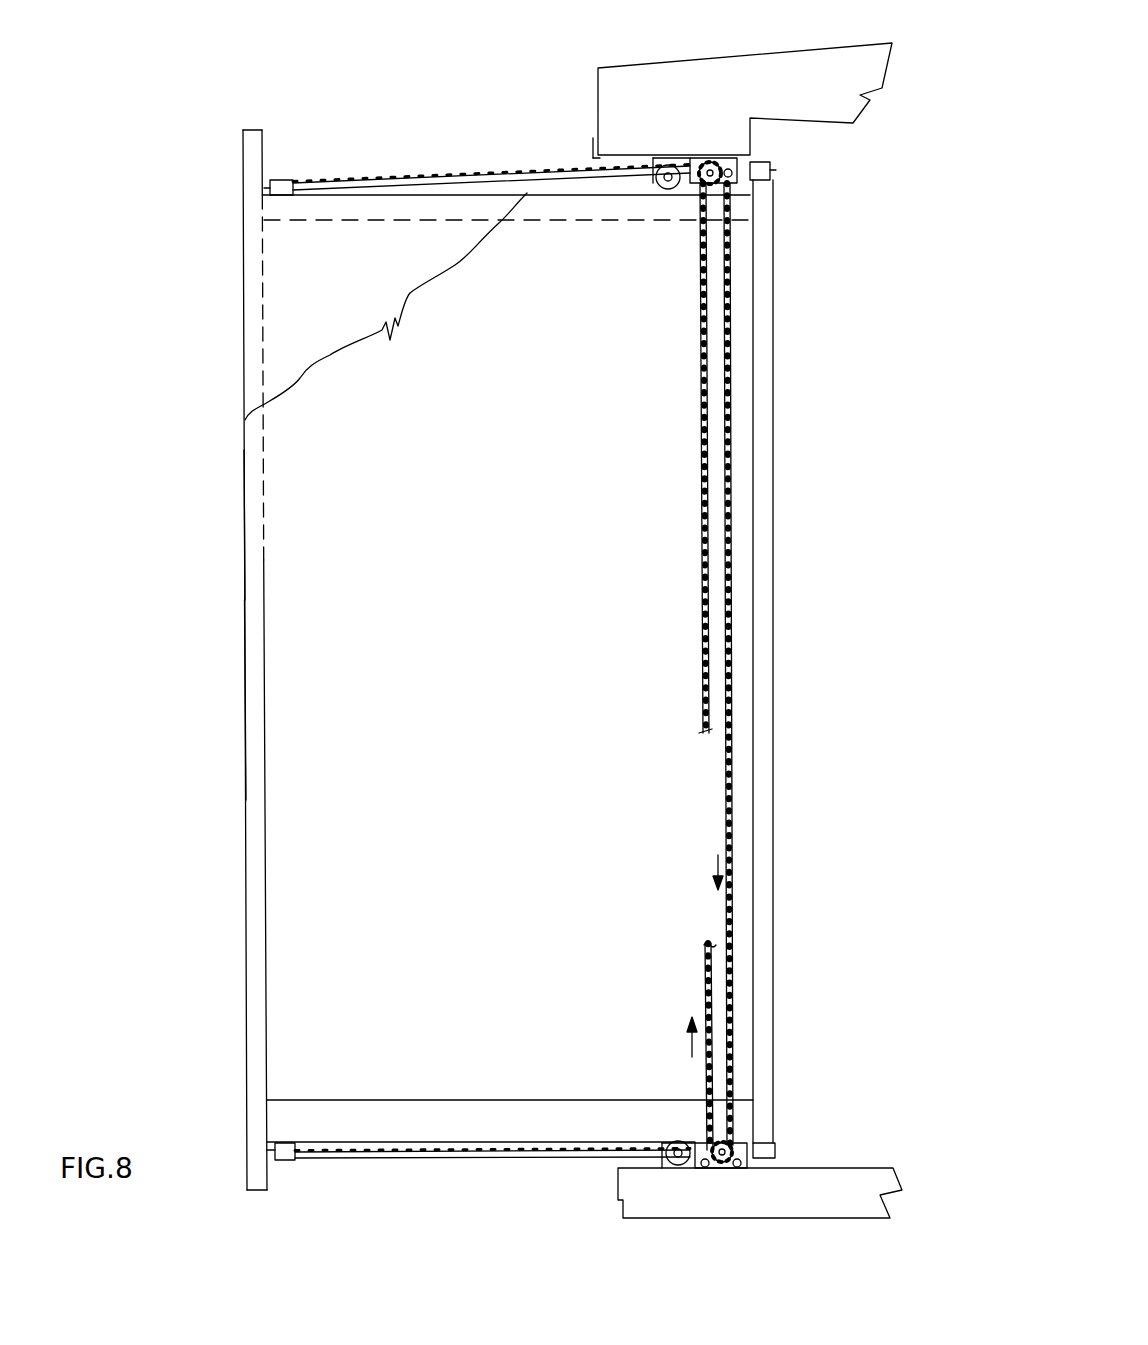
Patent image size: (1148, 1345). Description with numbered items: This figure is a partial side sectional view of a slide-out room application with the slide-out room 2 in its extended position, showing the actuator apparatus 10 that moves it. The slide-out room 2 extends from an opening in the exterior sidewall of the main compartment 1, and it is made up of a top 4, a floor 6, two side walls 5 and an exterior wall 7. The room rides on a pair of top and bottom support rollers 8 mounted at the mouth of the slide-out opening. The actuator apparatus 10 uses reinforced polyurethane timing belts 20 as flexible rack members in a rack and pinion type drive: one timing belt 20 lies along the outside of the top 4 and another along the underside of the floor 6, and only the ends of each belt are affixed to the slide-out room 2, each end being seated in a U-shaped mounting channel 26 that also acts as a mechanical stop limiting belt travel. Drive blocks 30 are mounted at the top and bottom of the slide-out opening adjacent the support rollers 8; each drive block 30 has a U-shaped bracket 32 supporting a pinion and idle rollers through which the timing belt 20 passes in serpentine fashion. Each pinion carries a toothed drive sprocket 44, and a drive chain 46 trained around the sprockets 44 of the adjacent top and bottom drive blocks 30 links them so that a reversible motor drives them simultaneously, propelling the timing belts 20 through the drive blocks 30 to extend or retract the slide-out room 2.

The main compartment 1 is at (615, 1205).
The slide-out room 2 is at (247, 925).
The top 4 is at (392, 1118).
The side walls 5 is at (303, 512).
The floor 6 is at (390, 207).
The exterior wall 7 is at (258, 680).
The support rollers 8 is at (668, 190).
The actuator apparatus 10 is at (577, 428).
The timing belts 20 is at (450, 177).
The U-shaped mounting channel 26 is at (282, 185).
The drive blocks 30 is at (717, 153).
The U-shaped bracket 32 is at (727, 163).
The toothed drive sprocket 44 is at (706, 165).
The drive chain 46 is at (702, 580).